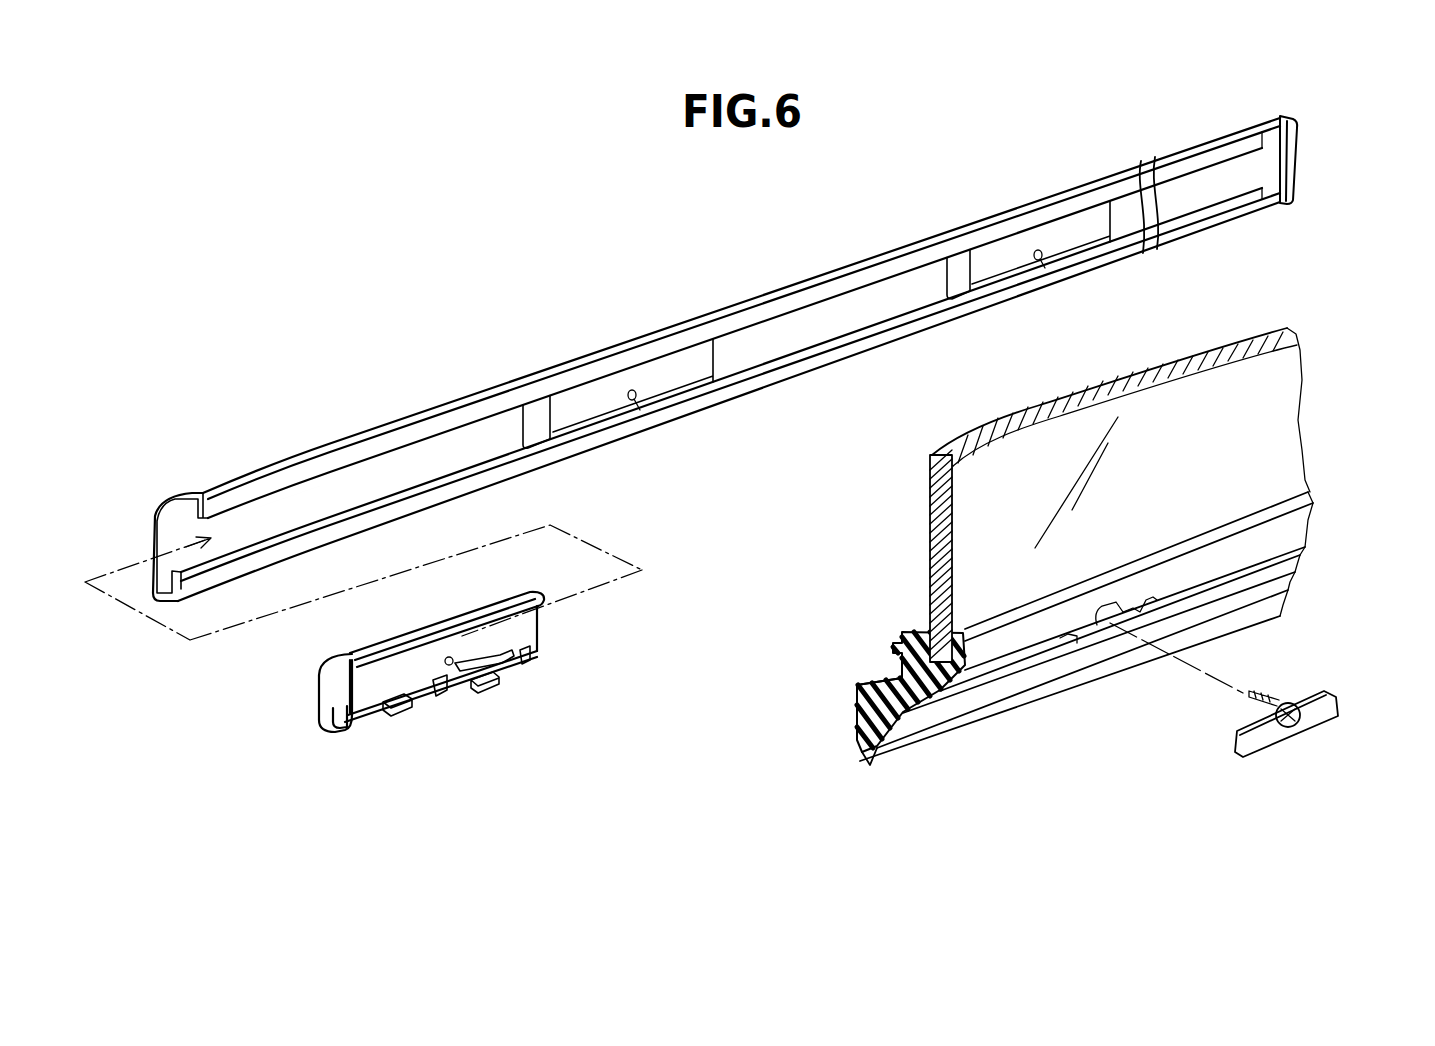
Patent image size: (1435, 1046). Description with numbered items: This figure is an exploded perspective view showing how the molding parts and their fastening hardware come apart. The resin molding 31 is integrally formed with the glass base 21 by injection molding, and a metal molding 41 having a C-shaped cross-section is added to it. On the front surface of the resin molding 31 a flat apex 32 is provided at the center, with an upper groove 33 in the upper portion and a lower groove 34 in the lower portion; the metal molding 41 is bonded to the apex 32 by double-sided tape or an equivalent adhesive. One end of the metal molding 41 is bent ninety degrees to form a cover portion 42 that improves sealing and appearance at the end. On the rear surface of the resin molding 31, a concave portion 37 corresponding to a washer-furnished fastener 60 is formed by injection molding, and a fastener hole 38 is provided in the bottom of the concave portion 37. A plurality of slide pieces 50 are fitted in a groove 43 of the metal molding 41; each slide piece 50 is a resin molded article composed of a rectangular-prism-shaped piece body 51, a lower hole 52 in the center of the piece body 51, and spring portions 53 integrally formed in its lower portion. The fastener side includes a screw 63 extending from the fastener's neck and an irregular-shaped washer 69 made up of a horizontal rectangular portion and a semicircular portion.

The glass base 21 is at (1270, 430).
The resin molding 31 is at (997, 700).
The apex 32 is at (860, 700).
The upper groove 33 is at (897, 648).
The lower groove 34 is at (858, 746).
The concave portion 37 is at (1087, 640).
The fastener hole 38 is at (1110, 627).
The metal molding 41 is at (730, 305).
The cover portion 42 is at (1303, 158).
The groove 43 is at (287, 511).
The slide piece 50 is at (1077, 240).
The piece body 51 is at (523, 630).
The lower hole 52 is at (1033, 268).
The spring portion 53 is at (465, 682).
The washer-furnished fastener 60 is at (1267, 766).
The screw 63 is at (1247, 709).
The irregular-shaped washer 69 is at (1260, 742).